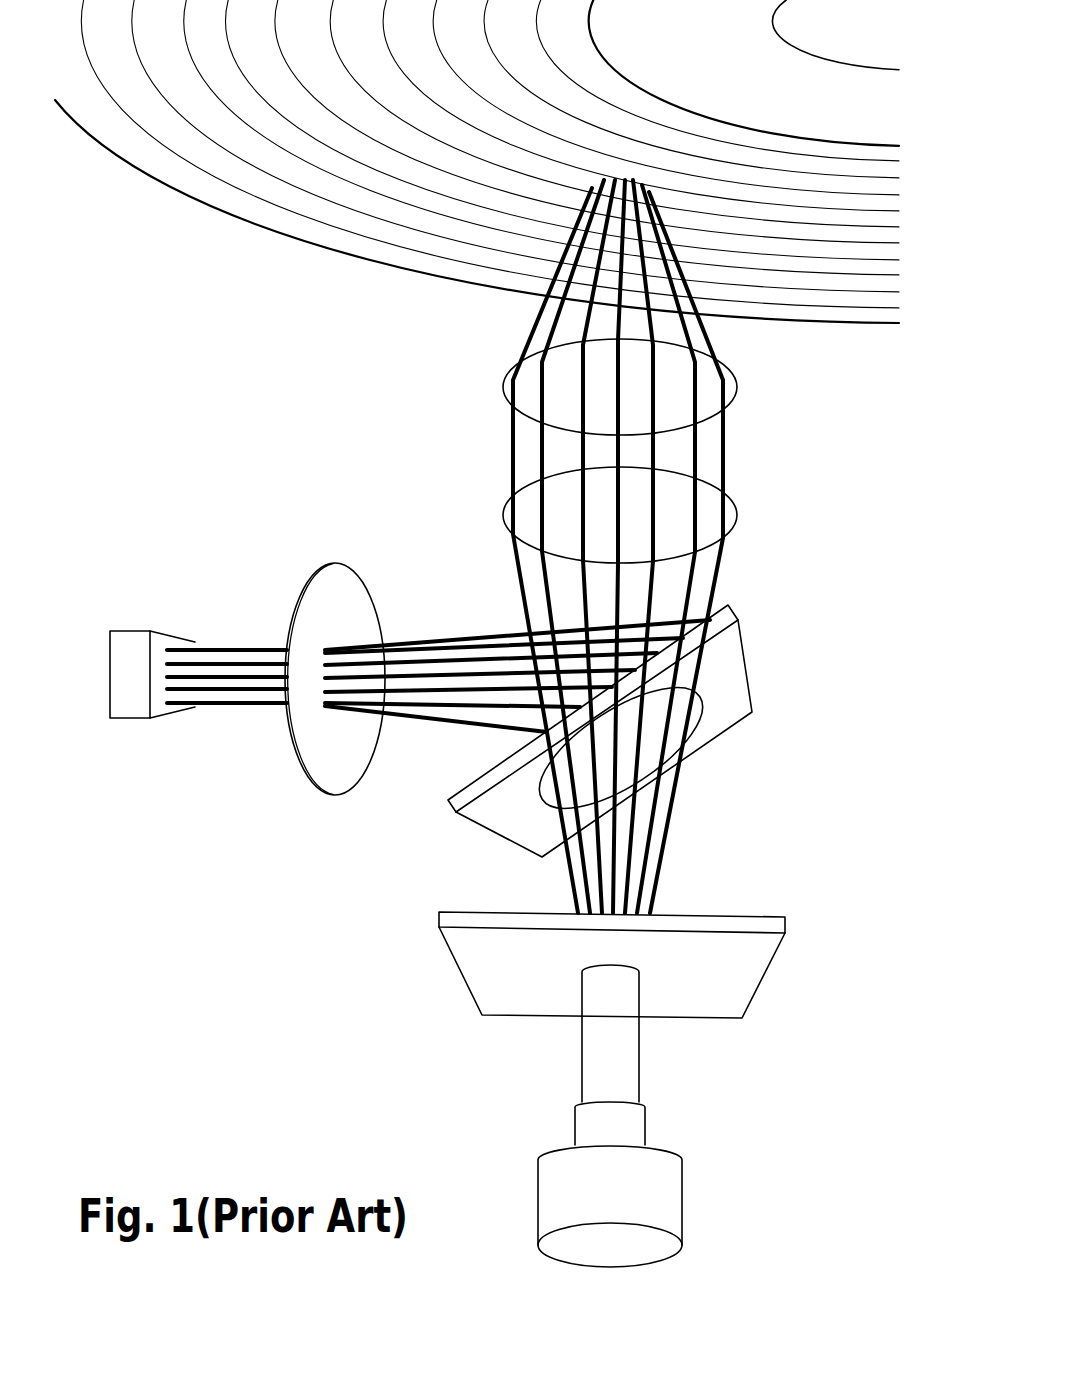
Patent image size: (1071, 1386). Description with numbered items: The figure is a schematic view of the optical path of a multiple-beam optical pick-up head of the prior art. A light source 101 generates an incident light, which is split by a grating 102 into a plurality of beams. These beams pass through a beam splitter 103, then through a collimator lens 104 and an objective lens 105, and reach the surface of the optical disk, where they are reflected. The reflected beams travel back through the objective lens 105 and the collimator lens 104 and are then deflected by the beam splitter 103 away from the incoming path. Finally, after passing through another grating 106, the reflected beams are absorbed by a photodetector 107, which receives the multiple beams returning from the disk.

The light source 101 is at (660, 1193).
The grating 102 is at (475, 968).
The beam splitter 103 is at (727, 675).
The collimator lens 104 is at (507, 513).
The objective lens 105 is at (508, 378).
The another grating 106 is at (330, 578).
The photodetector 107 is at (140, 625).